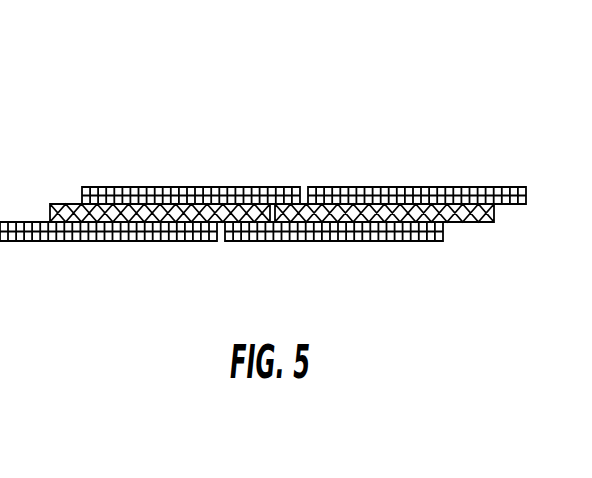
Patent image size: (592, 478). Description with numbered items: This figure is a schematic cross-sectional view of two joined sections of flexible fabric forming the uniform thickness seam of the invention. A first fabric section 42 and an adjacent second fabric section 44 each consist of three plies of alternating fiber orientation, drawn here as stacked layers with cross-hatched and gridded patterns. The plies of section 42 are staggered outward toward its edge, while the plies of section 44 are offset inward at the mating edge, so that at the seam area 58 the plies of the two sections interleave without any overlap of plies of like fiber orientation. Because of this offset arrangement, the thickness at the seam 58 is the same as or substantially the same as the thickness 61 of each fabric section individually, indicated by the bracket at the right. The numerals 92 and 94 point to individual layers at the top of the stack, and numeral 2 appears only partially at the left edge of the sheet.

The partial numeral (clipped) 2 is at (2, 113).
The first fabric section 42 is at (233, 258).
The second fabric section 44 is at (460, 258).
The seam area 58 is at (313, 177).
The thickness 61 is at (547, 182).
The first tile element 92 is at (94, 187).
The second tile element 94 is at (128, 187).